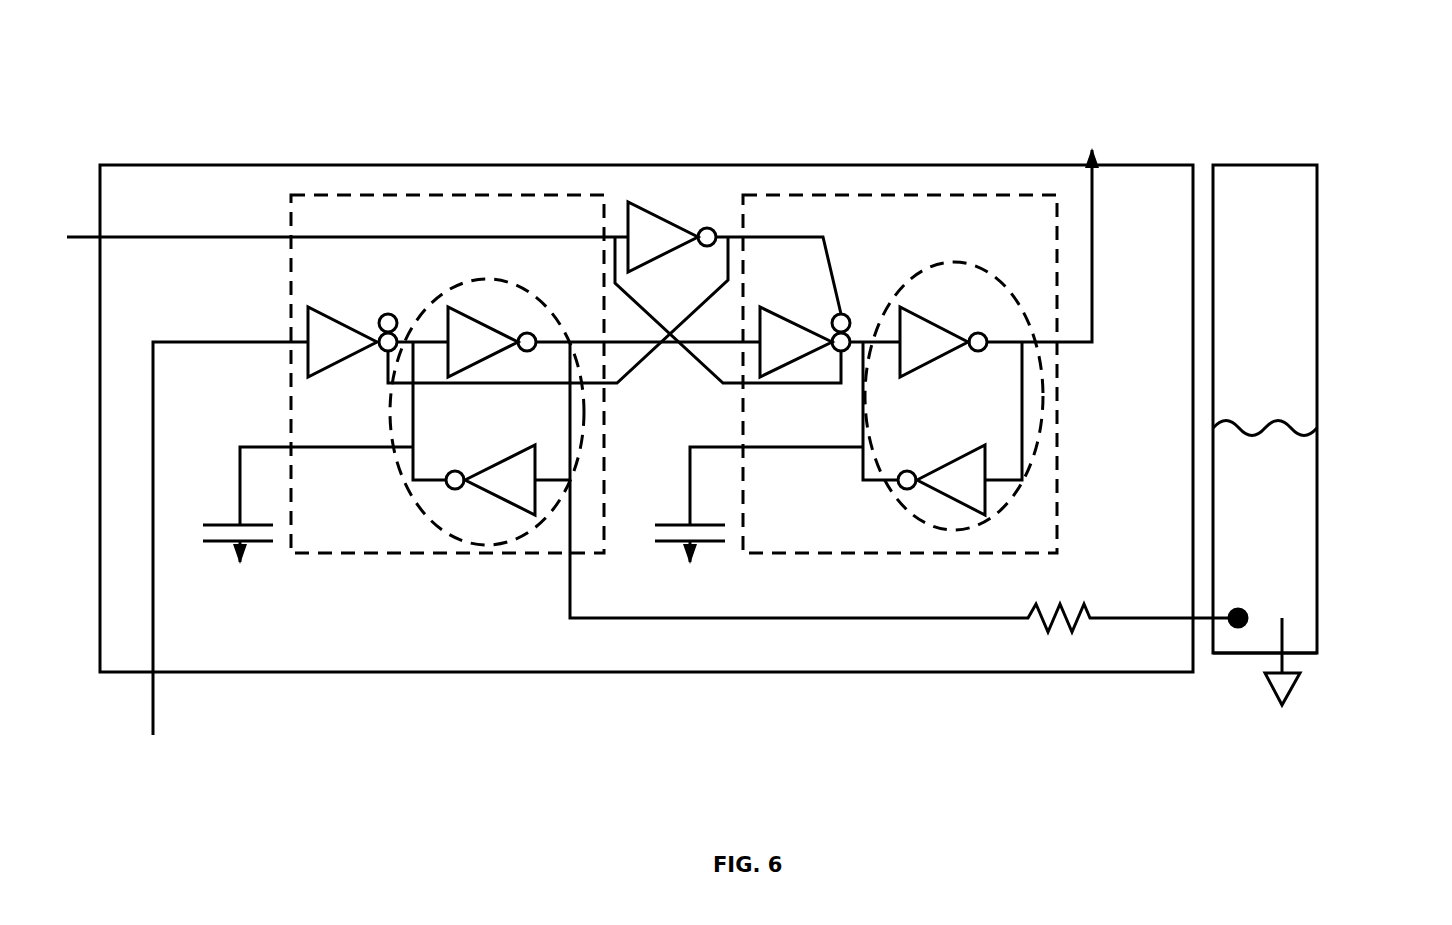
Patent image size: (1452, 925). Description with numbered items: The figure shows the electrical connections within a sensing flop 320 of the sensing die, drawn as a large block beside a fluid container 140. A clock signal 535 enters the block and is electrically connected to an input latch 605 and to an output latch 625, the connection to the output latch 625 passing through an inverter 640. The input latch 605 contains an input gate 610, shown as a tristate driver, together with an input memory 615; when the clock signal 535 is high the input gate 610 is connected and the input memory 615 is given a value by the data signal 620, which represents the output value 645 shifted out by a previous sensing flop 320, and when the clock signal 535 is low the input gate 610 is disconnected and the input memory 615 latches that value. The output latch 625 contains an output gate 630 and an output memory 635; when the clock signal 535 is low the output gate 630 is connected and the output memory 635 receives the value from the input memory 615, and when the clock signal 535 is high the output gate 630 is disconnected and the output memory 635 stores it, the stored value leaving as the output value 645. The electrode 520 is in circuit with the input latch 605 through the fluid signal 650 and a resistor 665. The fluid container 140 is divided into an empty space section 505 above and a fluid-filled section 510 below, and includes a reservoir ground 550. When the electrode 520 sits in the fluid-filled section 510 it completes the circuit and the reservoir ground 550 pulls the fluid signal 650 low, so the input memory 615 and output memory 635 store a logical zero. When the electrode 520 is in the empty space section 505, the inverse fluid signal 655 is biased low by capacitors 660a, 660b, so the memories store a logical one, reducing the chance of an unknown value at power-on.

The sensing flop 320 is at (292, 94).
The clock signal 535 is at (454, 279).
The data signal 620 is at (230, 558).
The input latch 605 is at (511, 193).
The input gate 610 is at (392, 297).
The input memory 615 is at (580, 437).
The capacitor 660a is at (300, 618).
The inverse fluid signal 655 is at (903, 590).
The inverter 640 is at (688, 205).
The output latch 625 is at (968, 195).
The output gate 630 is at (845, 300).
The output memory 635 is at (1044, 458).
The capacitor 660b is at (712, 560).
The output value 645 is at (1083, 206).
The fluid signal 650 is at (714, 630).
The resistor 665 is at (1053, 656).
The fluid container 140 is at (1286, 146).
The empty space section 505 is at (1265, 333).
The fluid-filled section 510 is at (1265, 548).
The electrode 520 is at (1256, 604).
The reservoir ground 550 is at (1285, 692).